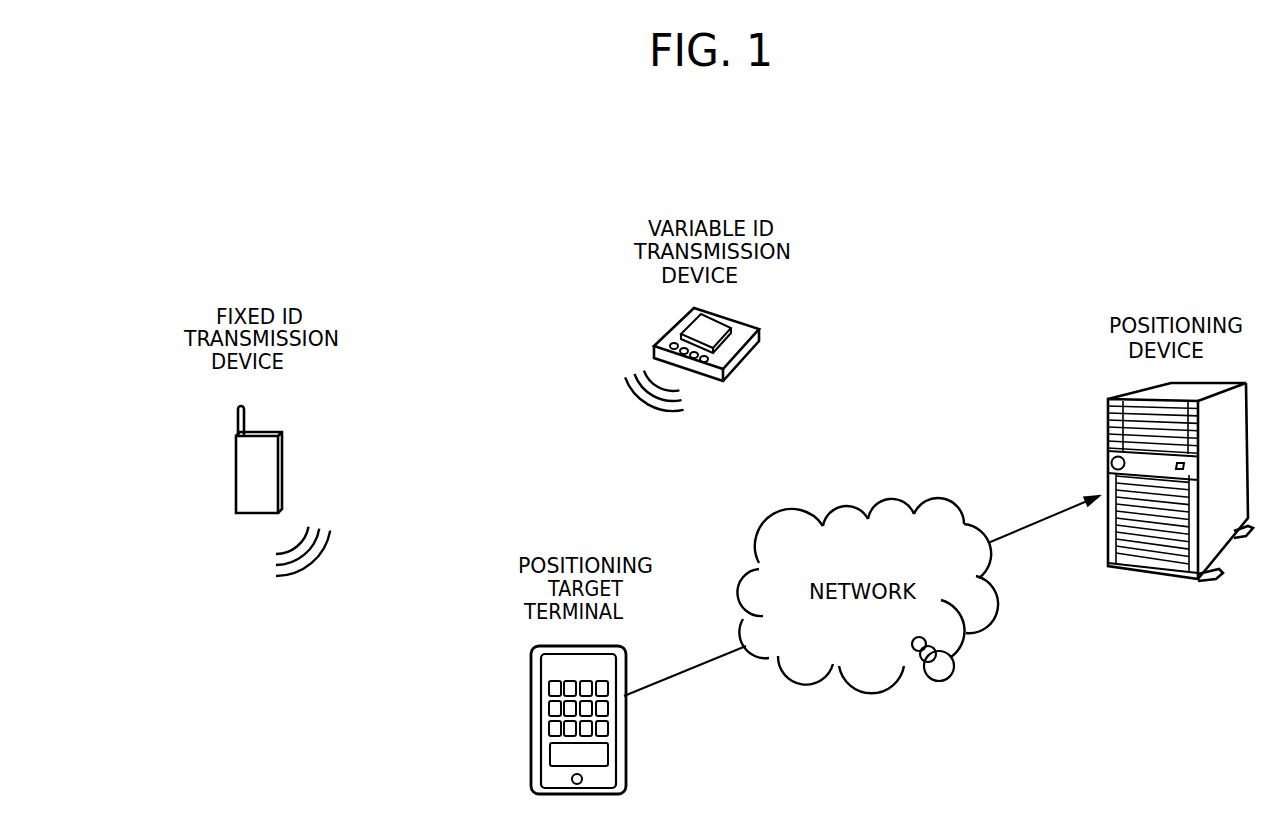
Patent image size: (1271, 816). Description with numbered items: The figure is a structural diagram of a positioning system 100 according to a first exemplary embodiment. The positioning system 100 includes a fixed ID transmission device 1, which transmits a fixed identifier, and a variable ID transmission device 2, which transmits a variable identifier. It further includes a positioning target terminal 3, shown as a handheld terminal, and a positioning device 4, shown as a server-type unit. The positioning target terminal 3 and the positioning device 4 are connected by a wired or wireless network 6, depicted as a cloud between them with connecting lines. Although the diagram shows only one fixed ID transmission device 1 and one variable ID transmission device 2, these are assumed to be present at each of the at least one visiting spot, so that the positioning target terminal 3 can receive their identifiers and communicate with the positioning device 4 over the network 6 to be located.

The fixed ID transmission device 1 is at (283, 463).
The variable ID transmission device 2 is at (695, 337).
The positioning target terminal 3 is at (591, 697).
The positioning device 4 is at (1180, 460).
The network 6 is at (960, 647).
The positioning system 100 is at (1023, 227).